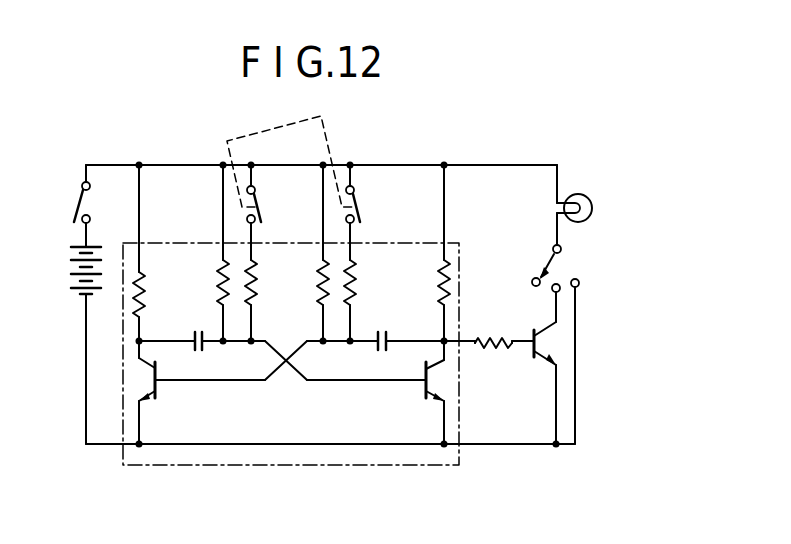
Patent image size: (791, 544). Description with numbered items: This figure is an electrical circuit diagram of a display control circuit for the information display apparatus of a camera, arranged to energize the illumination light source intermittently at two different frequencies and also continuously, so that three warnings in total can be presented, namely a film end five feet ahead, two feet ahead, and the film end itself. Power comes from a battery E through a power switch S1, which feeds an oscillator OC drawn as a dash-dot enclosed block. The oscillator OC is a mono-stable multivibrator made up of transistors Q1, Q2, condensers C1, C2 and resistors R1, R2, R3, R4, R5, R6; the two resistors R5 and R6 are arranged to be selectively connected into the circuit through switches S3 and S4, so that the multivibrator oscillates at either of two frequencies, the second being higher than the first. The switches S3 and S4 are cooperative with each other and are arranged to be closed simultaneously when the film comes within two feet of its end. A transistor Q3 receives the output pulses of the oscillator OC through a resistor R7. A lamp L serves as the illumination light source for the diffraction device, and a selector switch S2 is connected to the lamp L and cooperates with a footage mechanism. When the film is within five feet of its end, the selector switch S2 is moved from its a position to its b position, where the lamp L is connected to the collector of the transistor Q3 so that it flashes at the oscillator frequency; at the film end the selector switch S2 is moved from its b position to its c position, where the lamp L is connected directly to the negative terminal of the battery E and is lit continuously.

The power switch S1 is at (70, 202).
The battery E is at (79, 270).
The oscillator OC is at (220, 453).
The resistor R1 is at (155, 253).
The resistor R2 is at (211, 253).
The resistor R3 is at (312, 253).
The resistor R4 is at (433, 253).
The resistor R5 is at (266, 282).
The resistor R6 is at (365, 282).
The resistor R7 is at (493, 328).
The condenser C1 is at (196, 329).
The condenser C2 is at (384, 330).
The switch S3 is at (268, 194).
The switch S4 is at (367, 194).
The transistor Q1 is at (137, 392).
The transistor Q2 is at (444, 392).
The transistor Q3 is at (556, 368).
The lamp L is at (599, 181).
The selector switch S2 is at (539, 259).
The a position a is at (530, 292).
The b position b is at (563, 303).
The c position c is at (582, 359).